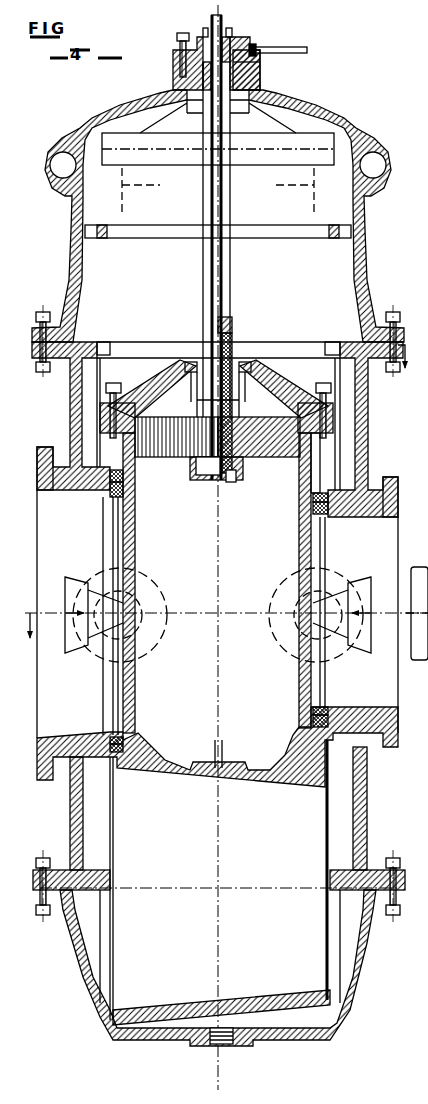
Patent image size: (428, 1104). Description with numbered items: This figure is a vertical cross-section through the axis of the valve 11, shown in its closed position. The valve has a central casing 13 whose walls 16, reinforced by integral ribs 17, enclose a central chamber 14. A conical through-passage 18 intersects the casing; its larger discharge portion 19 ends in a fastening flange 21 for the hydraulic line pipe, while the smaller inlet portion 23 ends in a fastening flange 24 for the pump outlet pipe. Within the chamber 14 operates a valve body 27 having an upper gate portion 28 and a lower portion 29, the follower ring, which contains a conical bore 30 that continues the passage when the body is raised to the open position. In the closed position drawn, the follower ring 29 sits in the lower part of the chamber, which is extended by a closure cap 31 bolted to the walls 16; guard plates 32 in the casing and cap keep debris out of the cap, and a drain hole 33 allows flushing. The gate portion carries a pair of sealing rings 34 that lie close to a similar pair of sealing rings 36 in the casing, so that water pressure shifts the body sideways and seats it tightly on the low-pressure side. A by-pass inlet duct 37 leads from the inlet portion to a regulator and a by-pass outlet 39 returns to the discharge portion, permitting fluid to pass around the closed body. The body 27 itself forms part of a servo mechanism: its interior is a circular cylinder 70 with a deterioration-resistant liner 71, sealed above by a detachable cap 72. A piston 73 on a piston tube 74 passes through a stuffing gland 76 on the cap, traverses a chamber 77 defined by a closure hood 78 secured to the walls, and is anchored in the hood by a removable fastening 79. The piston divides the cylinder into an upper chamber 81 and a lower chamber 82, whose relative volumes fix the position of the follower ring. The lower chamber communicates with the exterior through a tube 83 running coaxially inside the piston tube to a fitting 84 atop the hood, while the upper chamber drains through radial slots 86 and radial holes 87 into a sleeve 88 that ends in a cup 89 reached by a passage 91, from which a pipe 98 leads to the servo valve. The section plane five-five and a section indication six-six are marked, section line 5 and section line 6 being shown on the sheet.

The section line 5- 5 is at (218, 8).
The source of liquid 6 is at (225, 480).
The valve 11 is at (370, 812).
The central casing 13 is at (71, 392).
The central chamber 14 is at (305, 357).
The walls 16 is at (368, 410).
The integral ribs 17 is at (340, 440).
The conical through-passage 18 is at (371, 522).
The discharge portion 19 is at (66, 536).
The fastening flange 21 is at (46, 452).
The inlet portion 23 is at (399, 546).
The fastening flange 24 is at (404, 470).
The valve body 27 is at (302, 565).
The upper portion 28 is at (313, 480).
The lower portion 29 is at (266, 869).
The conical bore 30 is at (243, 784).
The closure cap 31 is at (358, 993).
The guard plates 32 is at (113, 958).
The drain hole 33 is at (229, 1048).
The sealing rings 34 is at (120, 490).
The sealing rings 36 is at (120, 476).
The by-pass inlet duct 37 is at (357, 655).
The by-pass outlet 39 is at (74, 577).
The circular cylinder 70 is at (136, 541).
The liner 71 is at (136, 518).
The detachable cap 72 is at (142, 403).
The piston 73 is at (259, 460).
The piston tube 74 is at (231, 203).
The stuffing gland 76 is at (201, 362).
The chamber 77 is at (100, 280).
The closure hood 78 is at (368, 262).
The removable fastening 79 is at (173, 72).
The upper chamber 81 is at (280, 408).
The lower chamber 82 is at (282, 556).
The tube 83 is at (233, 483).
The fitting 84 is at (197, 37).
The radial slots 86 is at (181, 393).
The radial holes 87 is at (262, 394).
The sleeve 88 is at (234, 340).
The cup 89 is at (238, 44).
The passage 91 is at (262, 70).
The pipe 98 is at (296, 47).